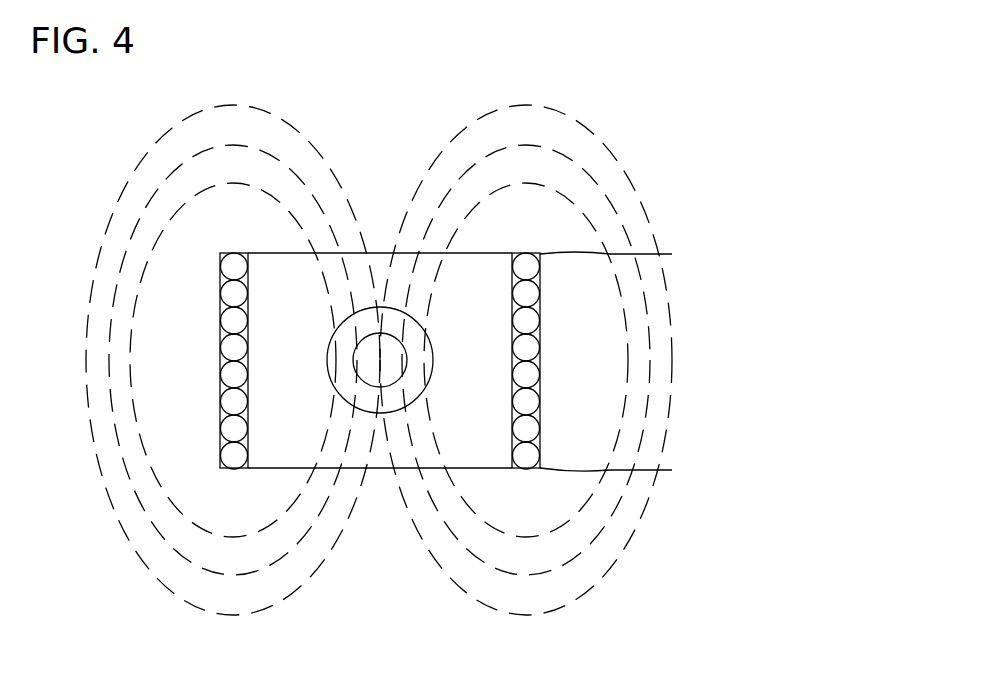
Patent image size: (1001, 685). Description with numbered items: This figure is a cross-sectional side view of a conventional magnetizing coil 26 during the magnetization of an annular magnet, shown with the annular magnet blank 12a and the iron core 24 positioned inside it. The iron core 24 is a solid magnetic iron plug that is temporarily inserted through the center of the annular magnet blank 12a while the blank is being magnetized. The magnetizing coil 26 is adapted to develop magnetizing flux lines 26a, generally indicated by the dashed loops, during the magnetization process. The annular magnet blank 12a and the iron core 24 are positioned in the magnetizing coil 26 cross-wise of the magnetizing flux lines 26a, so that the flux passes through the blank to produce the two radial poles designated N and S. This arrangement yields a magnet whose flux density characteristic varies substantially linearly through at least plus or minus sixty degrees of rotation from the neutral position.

The annular magnet blank 12a is at (418, 322).
The iron core 24 is at (403, 382).
The magnetizing coil 26 is at (652, 255).
The magnetizing flux lines 26a is at (598, 140).